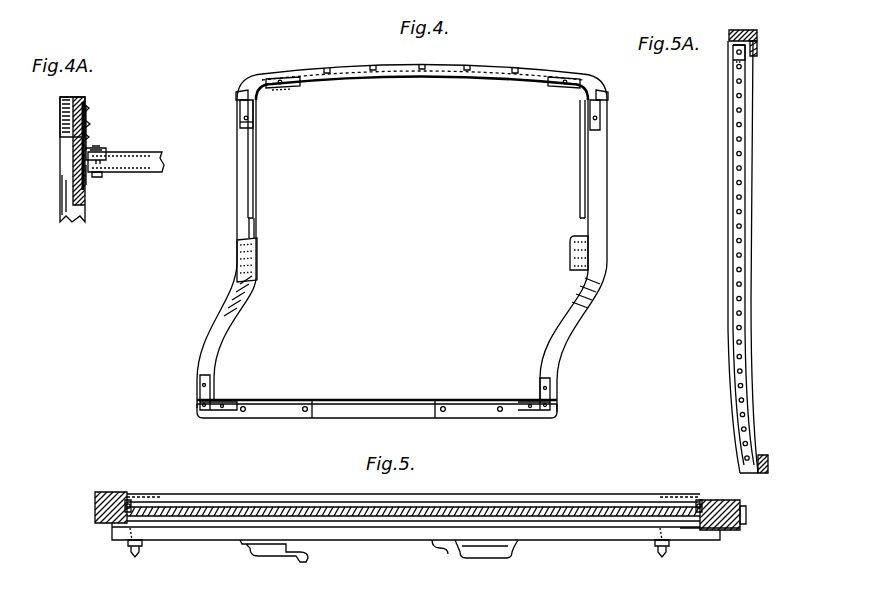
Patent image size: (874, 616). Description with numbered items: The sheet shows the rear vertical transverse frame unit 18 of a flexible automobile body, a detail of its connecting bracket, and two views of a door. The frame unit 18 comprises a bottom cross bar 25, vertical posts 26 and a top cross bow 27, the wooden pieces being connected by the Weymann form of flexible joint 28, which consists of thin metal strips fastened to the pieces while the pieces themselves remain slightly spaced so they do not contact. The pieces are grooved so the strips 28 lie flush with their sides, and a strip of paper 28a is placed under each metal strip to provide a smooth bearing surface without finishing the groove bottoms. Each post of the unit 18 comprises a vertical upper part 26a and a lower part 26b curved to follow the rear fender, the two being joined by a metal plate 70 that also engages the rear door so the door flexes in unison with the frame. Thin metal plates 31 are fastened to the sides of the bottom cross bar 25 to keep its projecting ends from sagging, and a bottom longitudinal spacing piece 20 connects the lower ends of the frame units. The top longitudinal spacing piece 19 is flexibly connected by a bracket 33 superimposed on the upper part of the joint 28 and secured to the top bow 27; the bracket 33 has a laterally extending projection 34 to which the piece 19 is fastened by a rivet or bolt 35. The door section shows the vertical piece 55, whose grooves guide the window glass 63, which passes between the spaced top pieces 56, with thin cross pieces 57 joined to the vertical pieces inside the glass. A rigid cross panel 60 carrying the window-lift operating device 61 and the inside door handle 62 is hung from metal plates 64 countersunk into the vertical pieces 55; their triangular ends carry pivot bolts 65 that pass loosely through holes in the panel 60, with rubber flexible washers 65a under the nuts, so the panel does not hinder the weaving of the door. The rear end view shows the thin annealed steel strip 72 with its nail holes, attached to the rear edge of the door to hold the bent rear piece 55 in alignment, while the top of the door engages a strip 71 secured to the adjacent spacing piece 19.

In FIG. 4A, the rear vertical transverse frame unit 18 is at (62, 98).
In FIG. 4, the rear vertical transverse frame unit 18 is at (302, 64).
In FIG. 4A, the top longitudinal spacing piece 19 is at (158, 166).
In FIG. 5A, the top longitudinal spacing piece 19 is at (742, 30).
In FIG. 5A, the bottom longitudinal spacing piece 20 is at (768, 460).
In FIG. 4, the bottom cross bar 25 is at (345, 400).
In FIG. 4A, the vertical post 26 is at (60, 182).
In FIG. 4, the vertical post 26 is at (258, 172).
In FIG. 4, the upper post part 26a is at (254, 202).
In FIG. 4, the lower post part 26b is at (216, 322).
In FIG. 4, the top cross bow 27 is at (492, 67).
In FIG. 4A, the flexible joint strip 28 is at (82, 150).
In FIG. 4, the flexible joint strip 28 is at (254, 112).
In FIG. 5, the flexible joint strip 28 is at (130, 494).
In FIG. 4A, the paper strip 28a is at (72, 124).
In FIG. 4, the metal plate 31 is at (278, 414).
In FIG. 4A, the bracket 33 is at (88, 124).
In FIG. 4, the bracket 33 is at (262, 78).
In FIG. 4A, the laterally extending projection 34 is at (108, 148).
In FIG. 4, the laterally extending projection 34 is at (236, 96).
In FIG. 4A, the rivet or bolt 35 is at (98, 177).
In FIG. 5A, the vertical piece 55 is at (752, 264).
In FIG. 5, the vertical piece 55 is at (94, 502).
In FIG. 5A, the top piece 56 is at (732, 60).
In FIG. 5, the cross piece 57 is at (578, 502).
In FIG. 5, the cross panel 60 is at (436, 550).
In FIG. 5, the operating device 61 is at (278, 562).
In FIG. 5, the inside door handle 62 is at (494, 558).
In FIG. 5, the window glass 63 is at (216, 506).
In FIG. 5, the metal plate 64 is at (110, 536).
In FIG. 5, the pivot bolt 65 is at (133, 548).
In FIG. 5, the flexible washer 65a is at (142, 542).
In FIG. 4, the metal plate 70 is at (236, 254).
In FIG. 5A, the strip 71 is at (758, 50).
In FIG. 5A, the annealed steel strip 72 is at (742, 222).
In FIG. 5, the annealed steel strip 72 is at (744, 526).